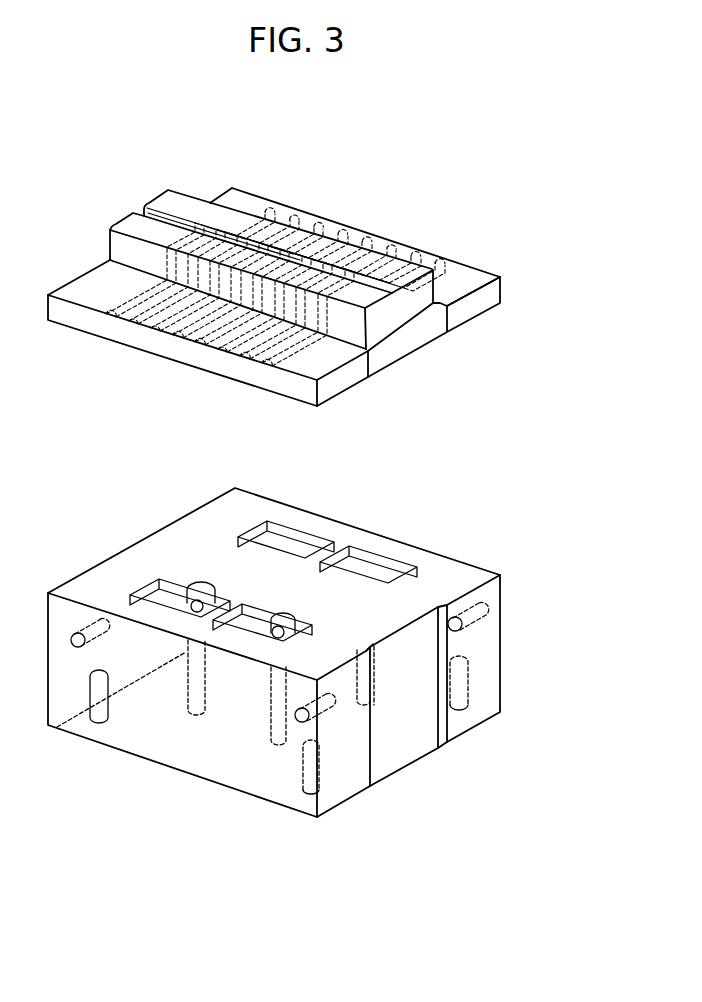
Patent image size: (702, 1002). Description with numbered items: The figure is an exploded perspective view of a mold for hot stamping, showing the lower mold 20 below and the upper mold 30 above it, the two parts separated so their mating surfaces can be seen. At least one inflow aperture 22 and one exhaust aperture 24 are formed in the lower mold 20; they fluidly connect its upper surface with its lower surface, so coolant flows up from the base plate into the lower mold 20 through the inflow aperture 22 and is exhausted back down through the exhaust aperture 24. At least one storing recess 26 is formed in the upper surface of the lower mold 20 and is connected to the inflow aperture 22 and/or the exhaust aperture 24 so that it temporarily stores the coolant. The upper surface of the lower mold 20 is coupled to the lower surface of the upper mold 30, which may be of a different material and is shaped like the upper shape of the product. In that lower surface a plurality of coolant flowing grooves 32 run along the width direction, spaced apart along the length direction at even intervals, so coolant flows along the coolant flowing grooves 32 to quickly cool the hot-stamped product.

The lower mold 20 is at (484, 651).
The inflow aperture 22 is at (279, 616).
The exhaust aperture 24 is at (376, 670).
The storing recess 26 is at (238, 605).
The upper mold 30 is at (455, 272).
The coolant flowing groove 32 is at (228, 343).